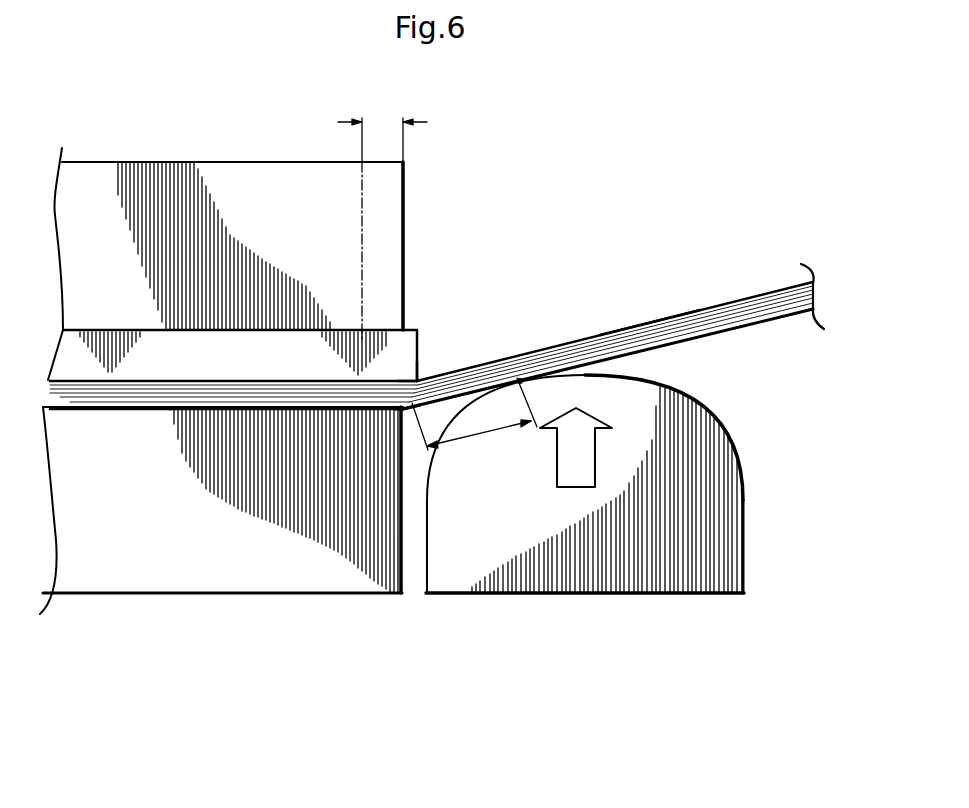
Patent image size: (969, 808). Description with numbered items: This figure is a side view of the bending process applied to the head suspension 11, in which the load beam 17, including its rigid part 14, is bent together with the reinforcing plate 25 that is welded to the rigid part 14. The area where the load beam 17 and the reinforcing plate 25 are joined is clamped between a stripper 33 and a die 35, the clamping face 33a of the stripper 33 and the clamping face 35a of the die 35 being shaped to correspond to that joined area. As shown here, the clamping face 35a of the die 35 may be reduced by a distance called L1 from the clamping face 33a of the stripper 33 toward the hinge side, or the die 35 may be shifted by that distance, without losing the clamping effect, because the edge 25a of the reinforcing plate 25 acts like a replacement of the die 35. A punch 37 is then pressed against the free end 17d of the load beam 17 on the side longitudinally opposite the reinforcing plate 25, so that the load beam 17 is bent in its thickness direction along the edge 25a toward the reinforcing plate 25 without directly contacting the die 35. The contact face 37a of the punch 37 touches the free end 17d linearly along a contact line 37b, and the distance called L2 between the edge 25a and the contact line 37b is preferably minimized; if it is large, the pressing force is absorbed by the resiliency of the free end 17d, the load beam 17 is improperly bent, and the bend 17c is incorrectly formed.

The head suspension 11 is at (661, 138).
The rigid part 14 is at (613, 336).
The load beam 17 is at (751, 298).
The bend 17c is at (411, 433).
The free end 17d is at (639, 324).
The reinforcing plate 25 is at (395, 358).
The edge 25a is at (422, 380).
The stripper 33 is at (333, 557).
The clamping face 33a is at (213, 417).
The die 35 is at (222, 182).
The clamping face 35a is at (238, 262).
The punch 37 is at (705, 528).
The contact face 37a is at (672, 393).
The contact line 37b is at (519, 377).